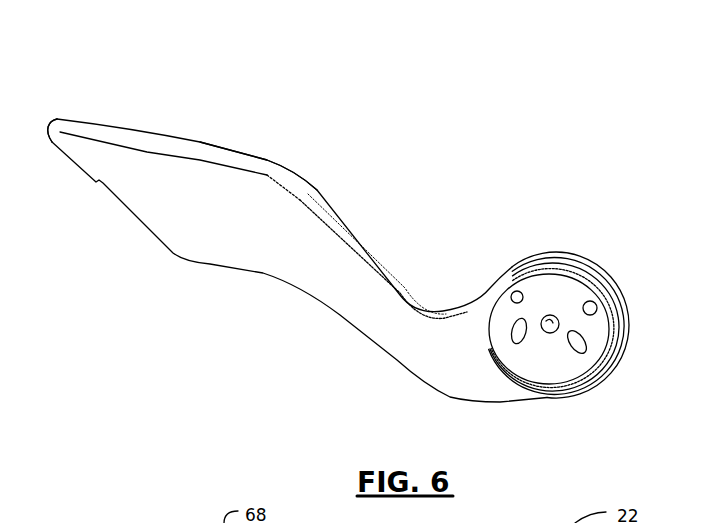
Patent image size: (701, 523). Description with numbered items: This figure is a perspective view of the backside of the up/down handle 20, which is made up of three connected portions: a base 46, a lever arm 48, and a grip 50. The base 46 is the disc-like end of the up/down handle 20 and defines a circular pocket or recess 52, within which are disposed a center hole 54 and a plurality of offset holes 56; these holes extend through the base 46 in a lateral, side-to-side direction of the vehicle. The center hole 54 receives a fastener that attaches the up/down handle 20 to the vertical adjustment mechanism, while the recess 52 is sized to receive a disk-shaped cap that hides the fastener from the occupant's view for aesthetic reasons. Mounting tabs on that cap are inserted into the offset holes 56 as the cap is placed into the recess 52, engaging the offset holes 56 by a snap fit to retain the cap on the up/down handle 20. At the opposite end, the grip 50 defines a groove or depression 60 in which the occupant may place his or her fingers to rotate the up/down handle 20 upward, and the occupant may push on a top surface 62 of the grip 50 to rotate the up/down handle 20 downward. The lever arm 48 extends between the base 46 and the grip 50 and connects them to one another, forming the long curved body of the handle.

The up/down handle 20 is at (481, 123).
The base 46 is at (580, 257).
The lever arm 48 is at (357, 240).
The grip 50 is at (240, 150).
The circular pocket or recess 52 is at (574, 275).
The center hole 54 is at (557, 322).
The offset holes 56 is at (592, 309).
The groove or depression 60 is at (182, 158).
The top surface 62 is at (183, 148).